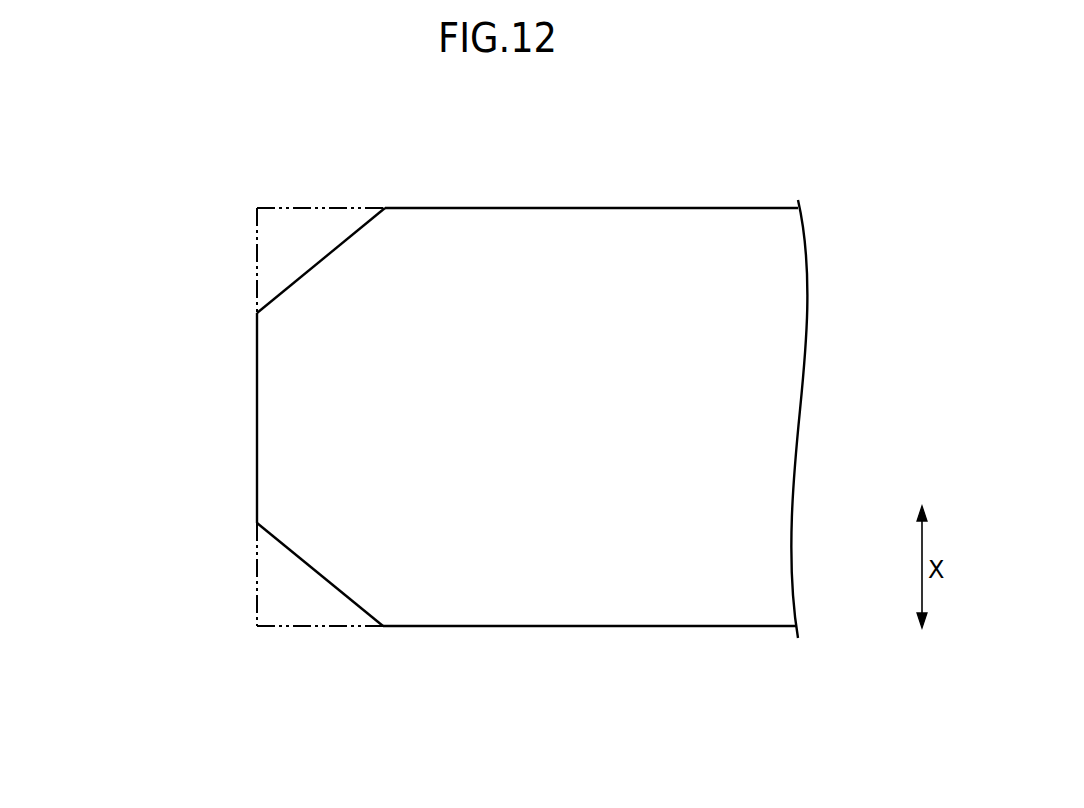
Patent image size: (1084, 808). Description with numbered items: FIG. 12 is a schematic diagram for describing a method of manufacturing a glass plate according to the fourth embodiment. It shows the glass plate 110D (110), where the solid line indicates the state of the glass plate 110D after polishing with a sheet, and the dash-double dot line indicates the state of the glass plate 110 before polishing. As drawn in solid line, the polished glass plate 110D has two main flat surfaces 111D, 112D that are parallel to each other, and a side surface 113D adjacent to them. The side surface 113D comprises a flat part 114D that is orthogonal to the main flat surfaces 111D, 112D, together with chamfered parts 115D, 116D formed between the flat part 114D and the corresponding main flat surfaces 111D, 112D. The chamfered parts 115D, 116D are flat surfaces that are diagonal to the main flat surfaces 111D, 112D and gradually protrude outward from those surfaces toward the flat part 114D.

The glass plate 110 is at (320, 208).
The glass plate 110D is at (772, 416).
The main flat surface 111D is at (553, 208).
The main flat surface 112D is at (553, 627).
The side surface 113D is at (217, 417).
The flat part 114D is at (257, 407).
The chamfered part 115D is at (285, 290).
The chamfered part 116D is at (260, 567).